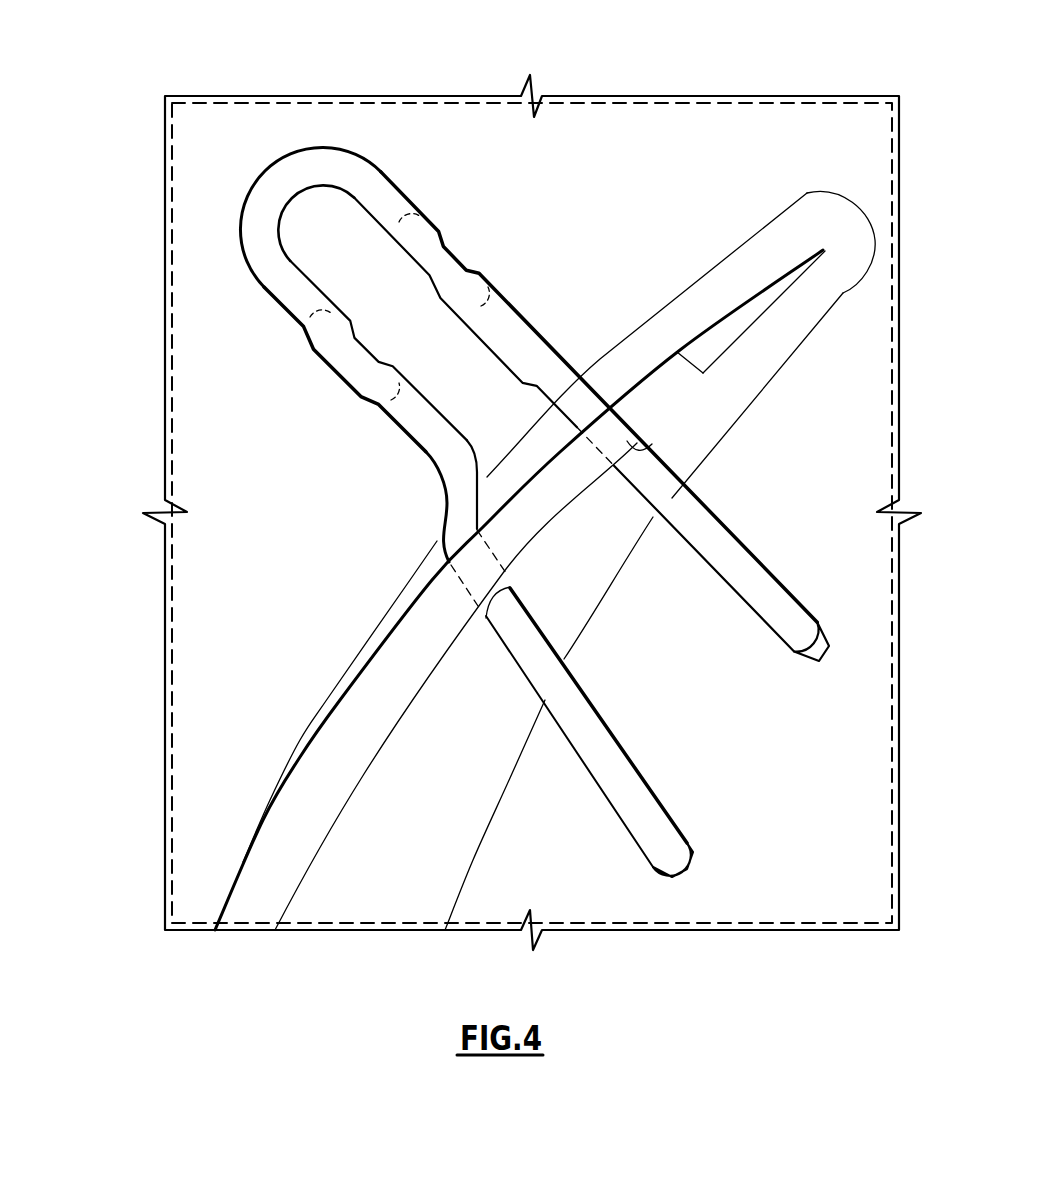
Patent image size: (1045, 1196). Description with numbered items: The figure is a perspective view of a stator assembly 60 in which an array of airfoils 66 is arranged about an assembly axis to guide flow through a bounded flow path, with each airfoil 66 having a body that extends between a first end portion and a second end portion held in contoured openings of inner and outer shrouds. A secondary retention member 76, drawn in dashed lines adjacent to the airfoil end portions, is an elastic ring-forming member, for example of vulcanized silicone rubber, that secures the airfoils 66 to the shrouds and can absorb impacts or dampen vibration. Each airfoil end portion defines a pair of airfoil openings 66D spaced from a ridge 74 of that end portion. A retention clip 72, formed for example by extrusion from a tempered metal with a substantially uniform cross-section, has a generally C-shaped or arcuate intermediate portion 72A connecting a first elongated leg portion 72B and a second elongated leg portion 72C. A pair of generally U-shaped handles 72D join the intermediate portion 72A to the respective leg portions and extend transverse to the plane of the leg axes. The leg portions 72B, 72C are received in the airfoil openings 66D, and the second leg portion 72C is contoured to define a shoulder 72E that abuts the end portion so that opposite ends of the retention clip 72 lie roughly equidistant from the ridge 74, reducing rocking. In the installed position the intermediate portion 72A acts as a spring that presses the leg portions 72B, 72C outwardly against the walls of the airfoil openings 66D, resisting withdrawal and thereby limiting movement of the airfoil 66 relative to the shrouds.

The stator assembly 60 is at (122, 53).
The secondary retention member 76 is at (719, 90).
The retention clip 72 is at (533, 467).
The intermediate portion 72A is at (335, 158).
The first elongated leg portion 72B is at (532, 322).
The second elongated leg portion 72C is at (405, 445).
The handles 72D is at (446, 263).
The shoulder 72E is at (469, 505).
The ridge 74 is at (256, 900).
The airfoil 66 is at (555, 580).
The airfoil openings 66D is at (641, 448).